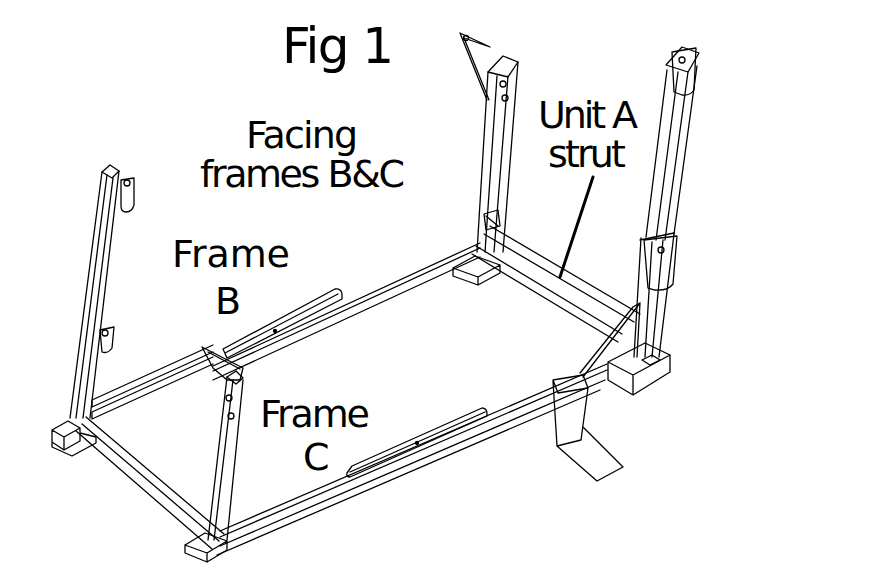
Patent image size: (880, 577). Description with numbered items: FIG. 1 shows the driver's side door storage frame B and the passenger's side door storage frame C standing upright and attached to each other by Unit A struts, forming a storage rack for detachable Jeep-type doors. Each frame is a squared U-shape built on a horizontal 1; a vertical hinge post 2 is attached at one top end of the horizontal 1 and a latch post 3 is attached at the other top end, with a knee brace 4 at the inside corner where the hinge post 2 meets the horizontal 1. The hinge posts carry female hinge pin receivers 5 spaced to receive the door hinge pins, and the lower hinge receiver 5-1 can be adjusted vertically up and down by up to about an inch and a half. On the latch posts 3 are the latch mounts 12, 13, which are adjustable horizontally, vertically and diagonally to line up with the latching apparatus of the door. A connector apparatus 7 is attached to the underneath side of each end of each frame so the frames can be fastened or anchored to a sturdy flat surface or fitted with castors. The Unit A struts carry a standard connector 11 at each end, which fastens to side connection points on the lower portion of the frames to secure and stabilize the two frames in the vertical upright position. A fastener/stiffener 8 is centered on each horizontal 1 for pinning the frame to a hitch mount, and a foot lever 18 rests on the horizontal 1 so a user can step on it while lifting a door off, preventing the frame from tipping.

The horizontal 1 is at (358, 298).
The vertical hinge post 2 is at (95, 285).
The latch post 3 is at (218, 472).
The knee brace 4 is at (102, 405).
The hinge pin receiver 5 is at (125, 192).
The hinge receiver 5-1 is at (104, 350).
The connector apparatus 7 is at (55, 437).
The fastener/stiffener 8 is at (307, 317).
The standard connector 11 is at (497, 222).
The latch mount 12 is at (215, 358).
The latch mount 13 is at (478, 63).
The foot lever 18 is at (578, 422).